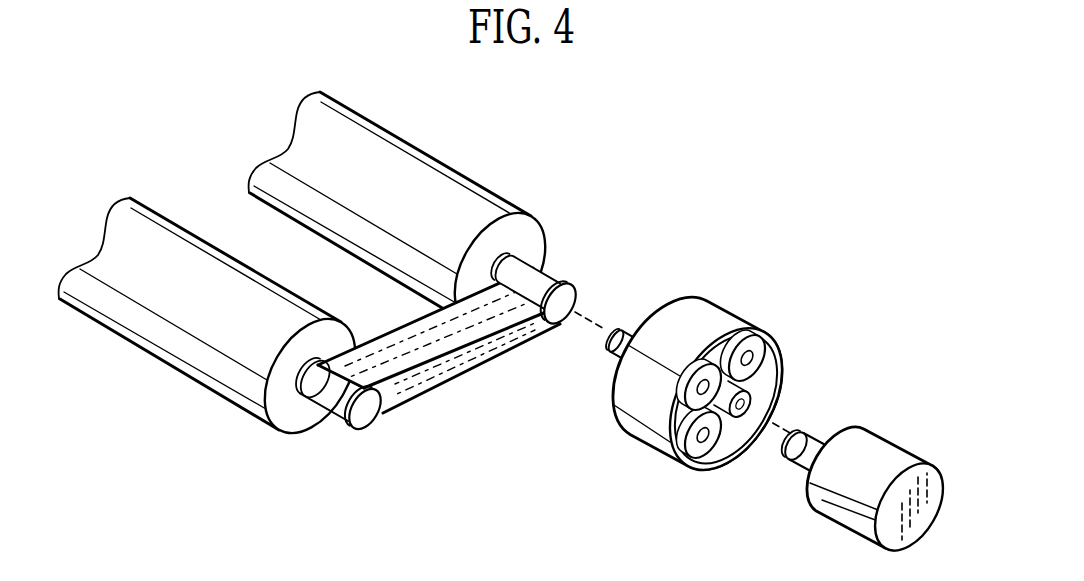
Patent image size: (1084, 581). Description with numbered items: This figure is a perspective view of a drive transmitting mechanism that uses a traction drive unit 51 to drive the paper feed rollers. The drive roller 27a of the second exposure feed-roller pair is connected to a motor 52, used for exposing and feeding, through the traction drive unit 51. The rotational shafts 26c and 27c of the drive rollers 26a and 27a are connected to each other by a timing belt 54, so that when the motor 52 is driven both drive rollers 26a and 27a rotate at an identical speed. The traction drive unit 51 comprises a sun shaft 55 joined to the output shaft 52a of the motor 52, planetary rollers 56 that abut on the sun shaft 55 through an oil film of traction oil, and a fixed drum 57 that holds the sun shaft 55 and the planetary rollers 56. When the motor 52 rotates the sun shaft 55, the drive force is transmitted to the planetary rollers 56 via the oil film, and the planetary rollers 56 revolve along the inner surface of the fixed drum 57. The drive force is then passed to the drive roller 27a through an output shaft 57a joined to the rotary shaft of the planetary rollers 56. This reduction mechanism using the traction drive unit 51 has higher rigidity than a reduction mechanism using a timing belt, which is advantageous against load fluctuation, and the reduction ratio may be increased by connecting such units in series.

The drive roller 26a is at (165, 243).
The rotational shaft 26c is at (372, 420).
The drive roller 27a is at (415, 180).
The rotational shaft 27c is at (568, 297).
The timing belt 54 is at (418, 375).
The traction drive unit 51 is at (714, 348).
The fixed drum 57 is at (633, 422).
The output shaft 57a is at (623, 333).
The planetary rollers 56 is at (757, 348).
The sun shaft 55 is at (757, 406).
The motor 52 is at (864, 462).
The output shaft 52a is at (803, 455).